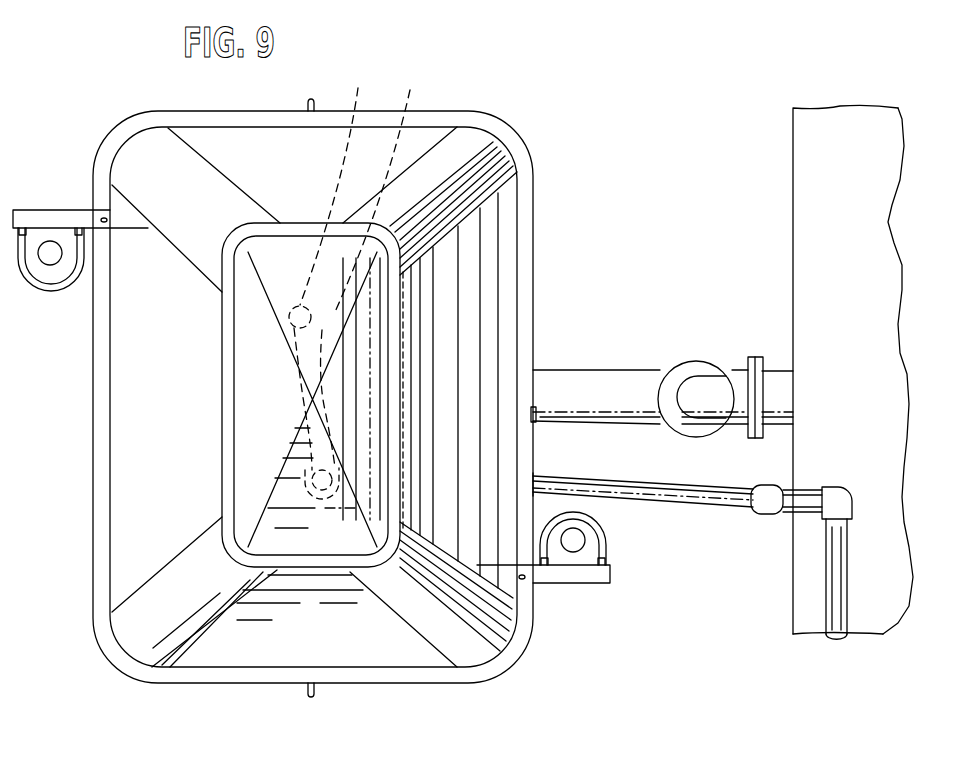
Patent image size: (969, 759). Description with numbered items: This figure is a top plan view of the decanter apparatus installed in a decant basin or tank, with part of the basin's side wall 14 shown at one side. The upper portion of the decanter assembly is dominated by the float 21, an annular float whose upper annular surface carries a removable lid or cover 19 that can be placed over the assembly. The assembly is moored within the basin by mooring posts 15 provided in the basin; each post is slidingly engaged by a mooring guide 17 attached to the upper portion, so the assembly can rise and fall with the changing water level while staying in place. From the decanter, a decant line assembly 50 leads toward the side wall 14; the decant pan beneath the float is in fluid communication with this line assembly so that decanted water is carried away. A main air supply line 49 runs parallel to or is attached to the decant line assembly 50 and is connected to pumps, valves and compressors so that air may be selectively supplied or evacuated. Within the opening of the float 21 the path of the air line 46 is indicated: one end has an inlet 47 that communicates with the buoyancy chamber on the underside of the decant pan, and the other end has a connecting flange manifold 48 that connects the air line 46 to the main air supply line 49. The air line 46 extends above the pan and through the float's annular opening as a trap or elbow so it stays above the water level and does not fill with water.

The side wall 14 is at (790, 222).
The mooring post 15 is at (49, 246).
The mooring guide 17 is at (58, 287).
The removable lid 19 is at (375, 650).
The float 21 is at (536, 177).
The air line 46 is at (376, 265).
The inlet 47 is at (336, 265).
The connecting flange manifold 48 is at (305, 485).
The main air supply line 49 is at (694, 510).
The decant line assembly 50 is at (575, 366).